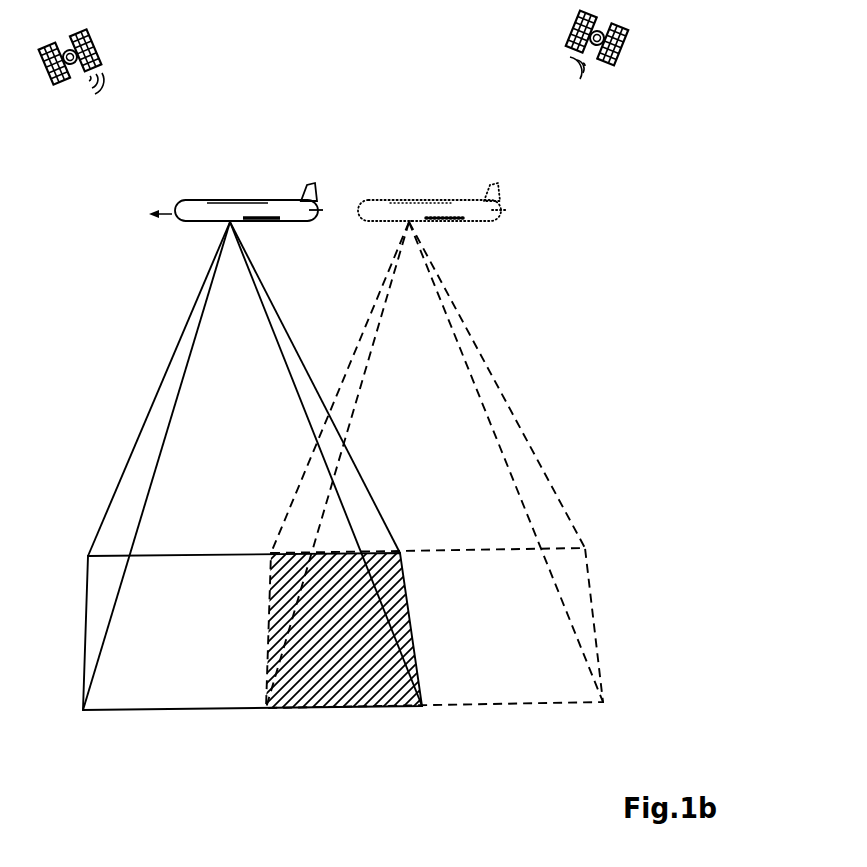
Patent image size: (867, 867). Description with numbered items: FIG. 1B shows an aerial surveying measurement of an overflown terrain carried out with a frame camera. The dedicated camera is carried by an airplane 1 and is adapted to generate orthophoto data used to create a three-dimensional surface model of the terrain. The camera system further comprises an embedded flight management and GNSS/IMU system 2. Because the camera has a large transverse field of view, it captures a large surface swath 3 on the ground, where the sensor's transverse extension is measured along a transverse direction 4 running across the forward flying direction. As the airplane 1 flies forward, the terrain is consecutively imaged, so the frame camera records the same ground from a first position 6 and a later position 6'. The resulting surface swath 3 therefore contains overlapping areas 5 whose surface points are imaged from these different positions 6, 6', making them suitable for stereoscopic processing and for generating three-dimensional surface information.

The airplane 1 is at (207, 187).
The embedded flight management and GNSS/IMU system 2 is at (648, 39).
The swath 3 is at (508, 465).
The transverse direction 4 is at (62, 566).
The overlapping areas 5 is at (305, 660).
The position 6 is at (207, 177).
The position 6' is at (432, 177).